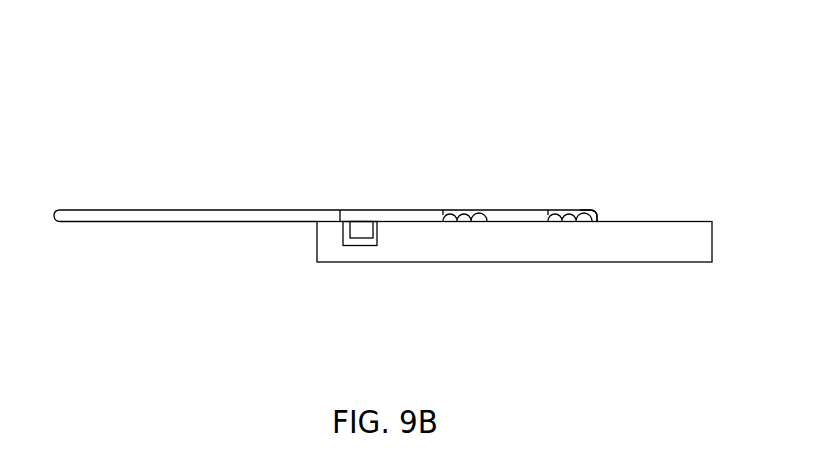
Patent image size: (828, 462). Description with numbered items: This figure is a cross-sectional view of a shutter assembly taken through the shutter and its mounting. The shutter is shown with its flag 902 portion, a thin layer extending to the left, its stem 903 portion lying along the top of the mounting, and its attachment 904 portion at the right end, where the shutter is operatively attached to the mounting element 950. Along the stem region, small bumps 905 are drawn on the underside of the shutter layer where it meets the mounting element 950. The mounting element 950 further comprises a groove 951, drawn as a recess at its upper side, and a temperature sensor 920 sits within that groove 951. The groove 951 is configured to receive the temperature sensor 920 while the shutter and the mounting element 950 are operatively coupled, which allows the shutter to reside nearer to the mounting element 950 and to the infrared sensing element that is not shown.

The flag 902 is at (206, 202).
The stem 903 is at (380, 202).
The attachment 904 is at (591, 203).
The bumps 905 is at (572, 202).
The temperature sensor 920 is at (362, 239).
The mounting element 950 is at (521, 254).
The groove 951 is at (380, 254).